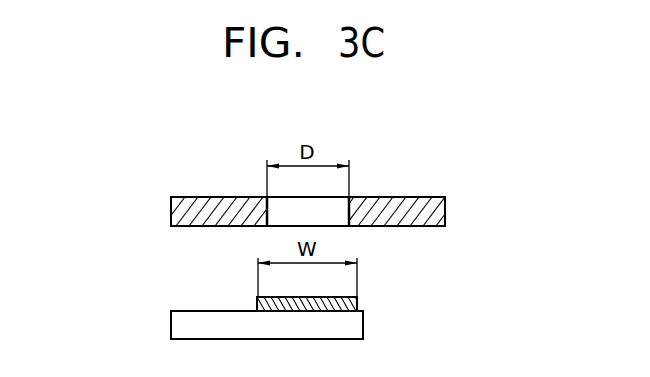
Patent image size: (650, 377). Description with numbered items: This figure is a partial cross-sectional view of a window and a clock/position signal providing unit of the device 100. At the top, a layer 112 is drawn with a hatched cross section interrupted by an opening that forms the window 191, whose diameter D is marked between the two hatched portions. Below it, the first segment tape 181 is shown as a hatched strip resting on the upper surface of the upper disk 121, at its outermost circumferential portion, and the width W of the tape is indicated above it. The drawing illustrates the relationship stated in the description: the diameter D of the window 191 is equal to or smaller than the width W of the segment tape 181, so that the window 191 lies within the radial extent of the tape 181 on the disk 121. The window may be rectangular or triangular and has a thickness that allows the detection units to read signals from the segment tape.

The display device 100 is at (121, 161).
The pixel defining layer 112 is at (198, 197).
The window 191 is at (344, 242).
The first segment tape 181 is at (358, 301).
The upper disk 121 is at (355, 328).